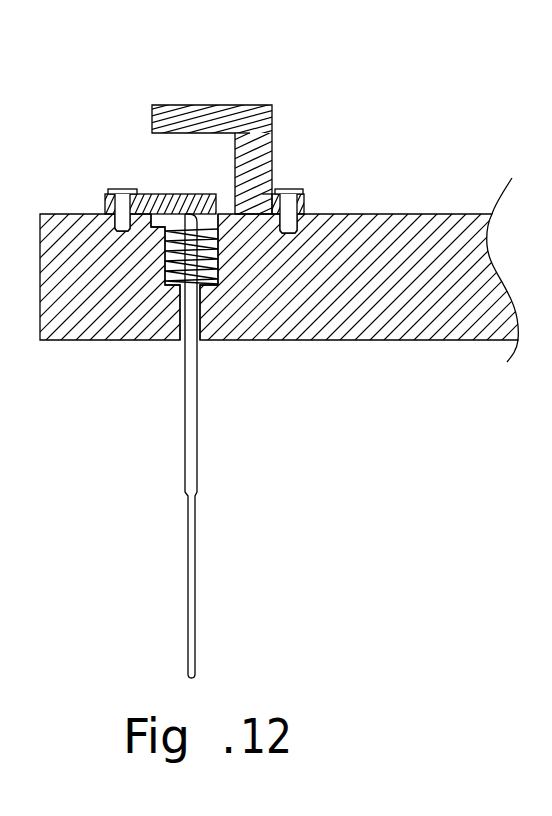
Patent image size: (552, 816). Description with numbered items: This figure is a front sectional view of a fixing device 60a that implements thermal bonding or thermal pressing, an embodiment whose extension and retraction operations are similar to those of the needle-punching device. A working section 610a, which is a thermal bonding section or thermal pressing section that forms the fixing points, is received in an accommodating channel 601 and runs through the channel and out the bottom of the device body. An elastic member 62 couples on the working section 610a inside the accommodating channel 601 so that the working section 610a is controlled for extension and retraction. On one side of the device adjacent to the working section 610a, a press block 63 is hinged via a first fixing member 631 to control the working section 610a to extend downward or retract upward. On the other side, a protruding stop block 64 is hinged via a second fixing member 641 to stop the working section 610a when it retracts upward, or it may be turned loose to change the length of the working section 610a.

The fixing device 60a is at (392, 172).
The accommodating channel 601 is at (212, 278).
The elastic member 62 is at (160, 285).
The working section 610a is at (190, 570).
The press block 63 is at (160, 194).
The first fixing member 631 is at (122, 192).
The protruding stop block 64 is at (223, 115).
The second fixing member 641 is at (288, 193).